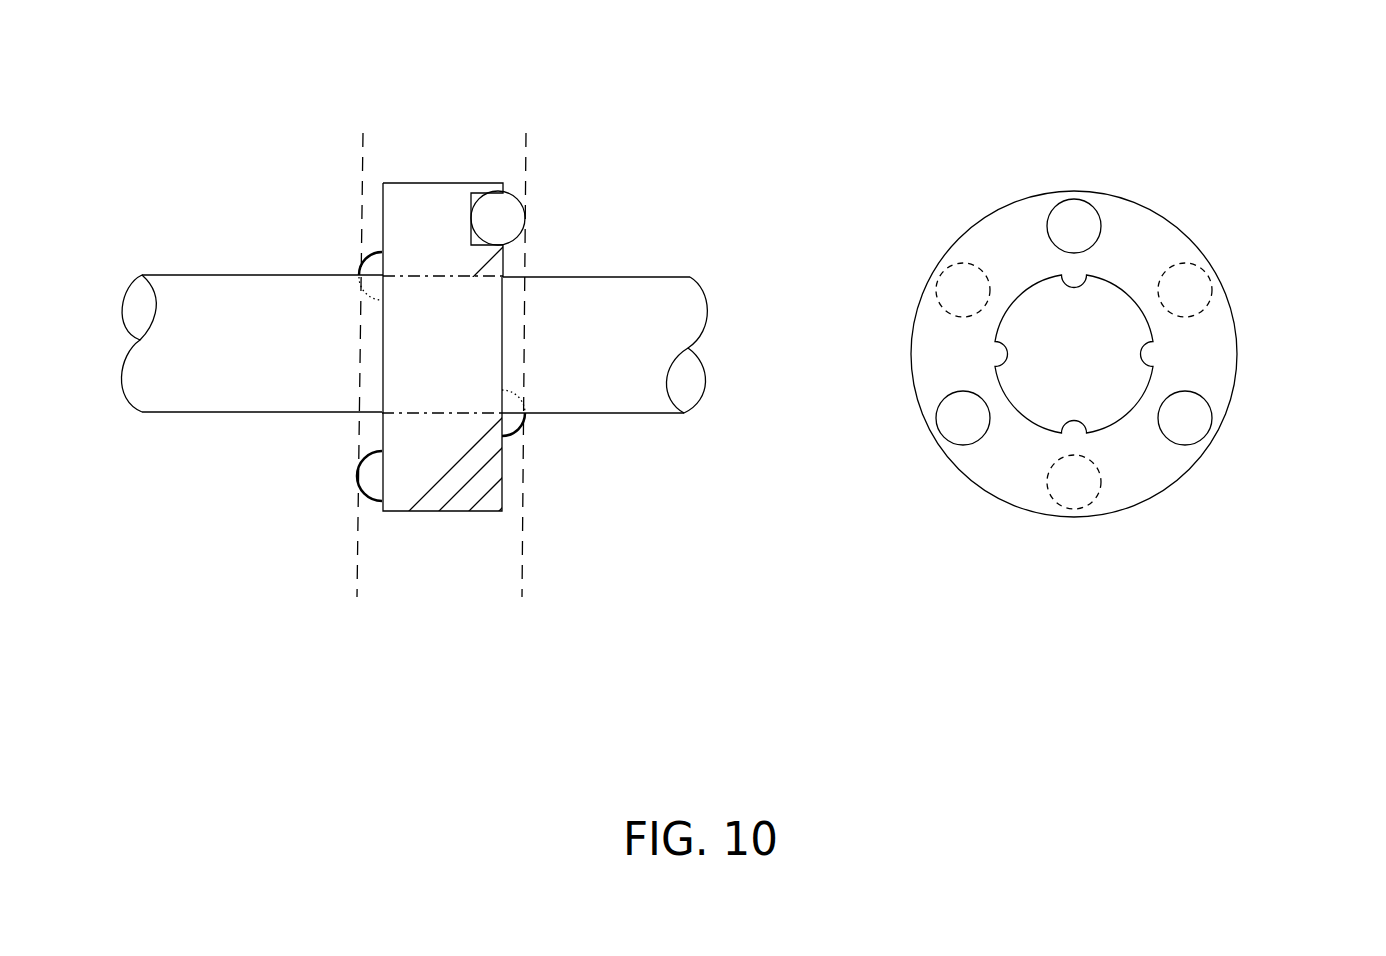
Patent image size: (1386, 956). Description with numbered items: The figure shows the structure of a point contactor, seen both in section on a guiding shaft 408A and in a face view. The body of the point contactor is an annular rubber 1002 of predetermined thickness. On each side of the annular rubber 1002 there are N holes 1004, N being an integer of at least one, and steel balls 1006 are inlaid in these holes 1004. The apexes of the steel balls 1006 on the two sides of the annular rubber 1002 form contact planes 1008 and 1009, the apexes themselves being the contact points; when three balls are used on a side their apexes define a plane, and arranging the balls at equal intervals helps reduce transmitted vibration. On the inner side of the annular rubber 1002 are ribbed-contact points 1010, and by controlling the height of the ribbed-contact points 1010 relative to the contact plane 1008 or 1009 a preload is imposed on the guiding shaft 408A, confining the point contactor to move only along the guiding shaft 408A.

The annular rubber 1002 is at (402, 188).
The holes 1004 is at (475, 193).
The steel balls 1006 is at (507, 212).
The contact plane 1008 is at (528, 238).
The contact plane 1009 is at (361, 177).
The ribbed-contact points 1010 is at (1148, 350).
The guiding shaft 408A is at (553, 391).